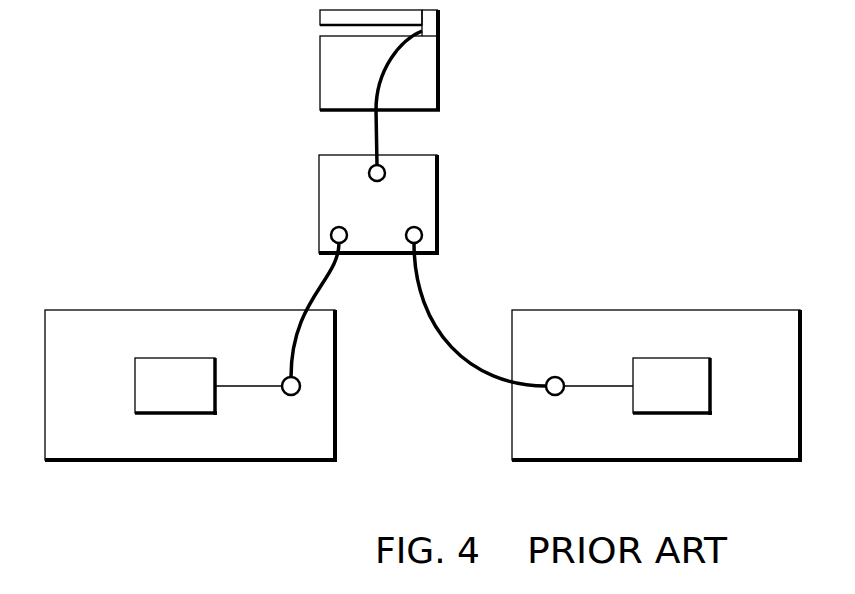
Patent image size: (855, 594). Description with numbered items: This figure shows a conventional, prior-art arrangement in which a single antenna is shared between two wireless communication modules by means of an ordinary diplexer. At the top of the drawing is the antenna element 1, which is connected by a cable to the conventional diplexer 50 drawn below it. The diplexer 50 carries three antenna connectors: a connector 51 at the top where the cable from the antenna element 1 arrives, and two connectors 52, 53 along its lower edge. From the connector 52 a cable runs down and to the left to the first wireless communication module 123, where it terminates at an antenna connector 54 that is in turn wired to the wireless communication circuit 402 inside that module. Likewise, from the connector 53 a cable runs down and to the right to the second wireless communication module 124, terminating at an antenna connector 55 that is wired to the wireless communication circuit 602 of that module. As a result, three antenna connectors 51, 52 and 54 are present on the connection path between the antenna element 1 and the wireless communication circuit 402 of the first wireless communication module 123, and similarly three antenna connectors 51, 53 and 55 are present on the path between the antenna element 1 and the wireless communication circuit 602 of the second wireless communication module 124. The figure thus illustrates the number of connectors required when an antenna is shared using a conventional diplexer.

The antenna element 1 is at (438, 70).
The diplexer 50 is at (438, 196).
The antenna connector 51 is at (385, 167).
The antenna connector 52 is at (331, 235).
The antenna connector 53 is at (422, 235).
The antenna connector 54 is at (290, 395).
The antenna connector 55 is at (556, 395).
The first wireless communication module 123 is at (167, 461).
The second wireless communication module 124 is at (670, 461).
The wireless communication circuit 402 is at (135, 386).
The wireless communication circuit 602 is at (712, 386).